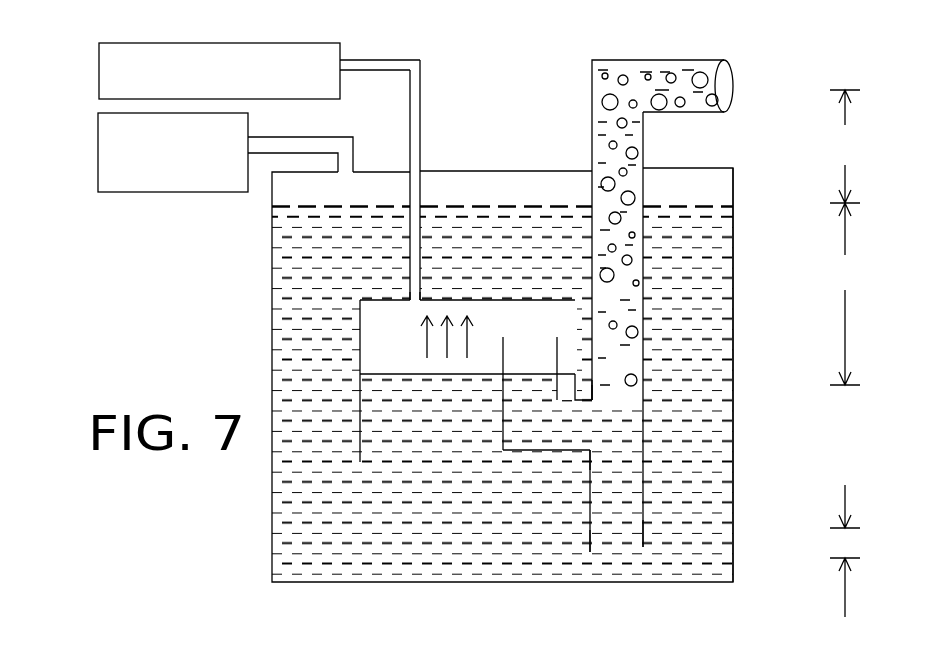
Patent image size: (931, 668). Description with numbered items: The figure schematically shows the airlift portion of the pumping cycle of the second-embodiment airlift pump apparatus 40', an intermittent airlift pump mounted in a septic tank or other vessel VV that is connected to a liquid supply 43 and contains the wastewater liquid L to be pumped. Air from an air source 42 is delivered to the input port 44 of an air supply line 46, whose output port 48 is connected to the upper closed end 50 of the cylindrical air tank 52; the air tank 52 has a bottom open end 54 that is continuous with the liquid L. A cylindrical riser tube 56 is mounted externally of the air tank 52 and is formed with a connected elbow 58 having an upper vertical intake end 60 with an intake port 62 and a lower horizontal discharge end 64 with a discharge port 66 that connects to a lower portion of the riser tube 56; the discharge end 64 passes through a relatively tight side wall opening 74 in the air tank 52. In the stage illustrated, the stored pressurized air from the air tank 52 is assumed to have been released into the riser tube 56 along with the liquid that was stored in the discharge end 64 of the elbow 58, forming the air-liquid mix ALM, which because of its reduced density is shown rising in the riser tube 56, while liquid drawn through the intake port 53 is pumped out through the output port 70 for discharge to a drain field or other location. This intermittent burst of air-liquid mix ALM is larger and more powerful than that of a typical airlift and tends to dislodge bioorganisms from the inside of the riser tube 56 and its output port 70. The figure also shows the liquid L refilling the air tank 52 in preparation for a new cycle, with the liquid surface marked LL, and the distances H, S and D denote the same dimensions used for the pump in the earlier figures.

The airlift pump apparatus 40' is at (688, 205).
The air source 42 is at (99, 80).
The liquid supply 43 is at (192, 193).
The input port 44 is at (340, 60).
The air supply line 46 is at (421, 145).
The output port 48 is at (412, 302).
The upper closed end 50 is at (432, 300).
The air tank 52 is at (352, 333).
The intake port 53 is at (628, 560).
The bottom open end 54 is at (393, 462).
The riser tube 56 is at (658, 384).
The elbow 58 is at (492, 467).
The upper vertical intake end 60 is at (569, 353).
The intake port 62 is at (544, 330).
The lower horizontal discharge end 64 is at (545, 452).
The discharge port 66 is at (608, 431).
The output port 70 is at (735, 74).
The side wall opening 74 is at (577, 394).
The liquid L is at (605, 402).
The liquid level LL is at (502, 206).
The air-liquid mix ALM is at (637, 142).
The vessel VV is at (734, 412).
The distance H is at (845, 146).
The distance S is at (845, 294).
The distance D is at (845, 551).